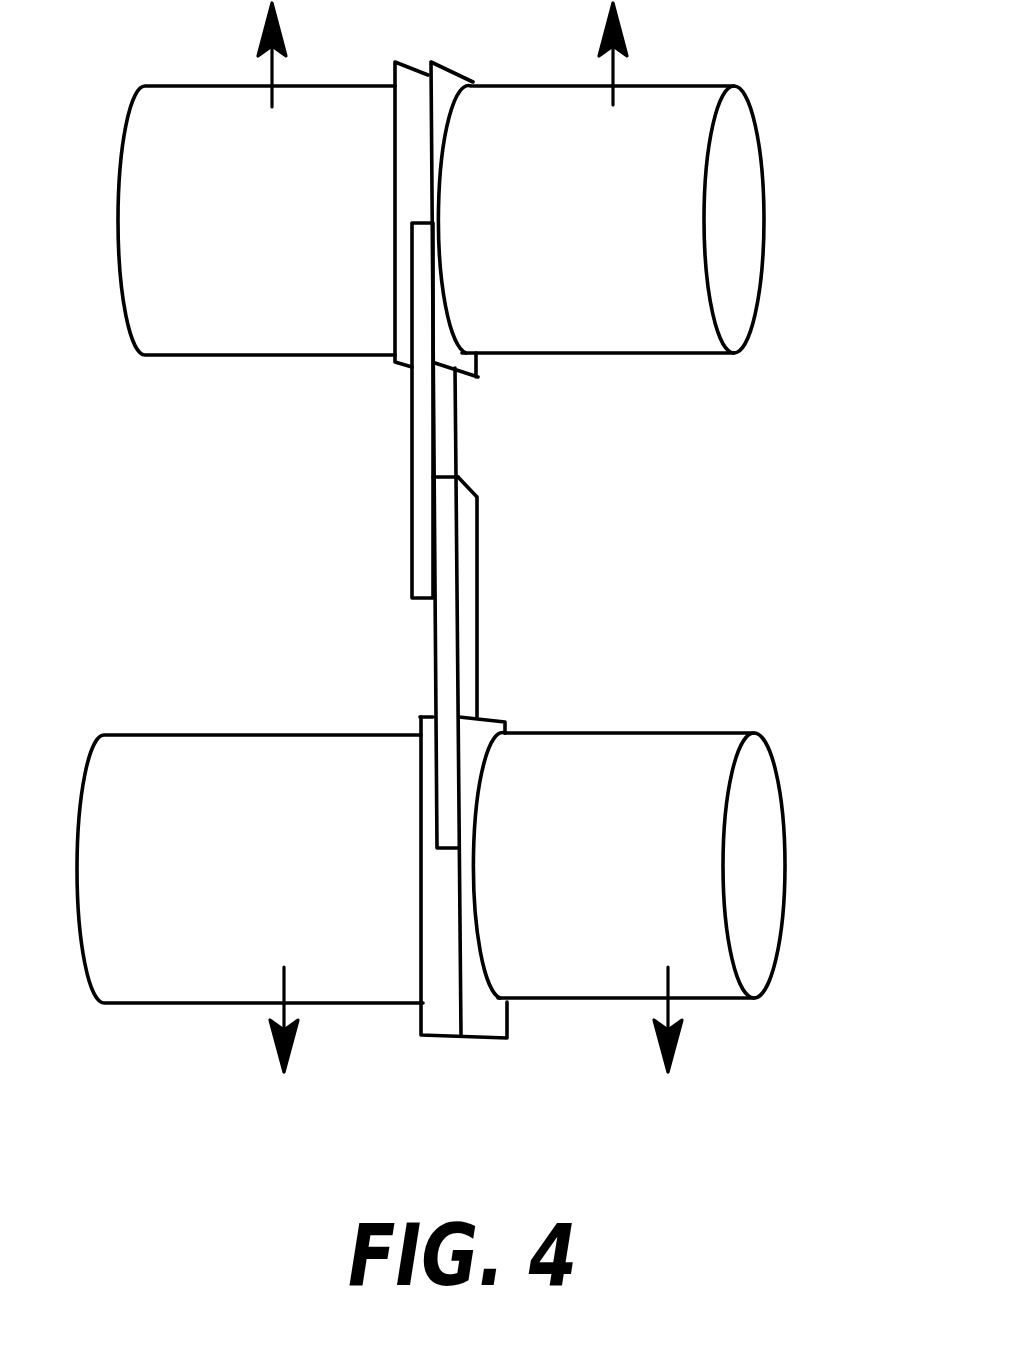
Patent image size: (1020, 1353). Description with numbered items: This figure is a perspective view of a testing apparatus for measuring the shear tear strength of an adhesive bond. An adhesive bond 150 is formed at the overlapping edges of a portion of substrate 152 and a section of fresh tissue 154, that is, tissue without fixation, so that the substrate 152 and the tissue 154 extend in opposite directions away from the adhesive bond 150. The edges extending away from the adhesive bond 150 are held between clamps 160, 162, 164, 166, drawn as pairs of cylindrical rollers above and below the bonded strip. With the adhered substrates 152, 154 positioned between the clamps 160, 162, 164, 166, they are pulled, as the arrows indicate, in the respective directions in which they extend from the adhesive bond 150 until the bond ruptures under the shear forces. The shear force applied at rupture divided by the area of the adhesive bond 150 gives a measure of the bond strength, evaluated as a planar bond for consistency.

The adhesive bond 150 is at (433, 530).
The substrate 152 is at (413, 428).
The tissue 154 is at (462, 620).
The clamp 160 is at (615, 334).
The clamp 162 is at (253, 325).
The clamp 164 is at (580, 977).
The clamp 166 is at (367, 983).